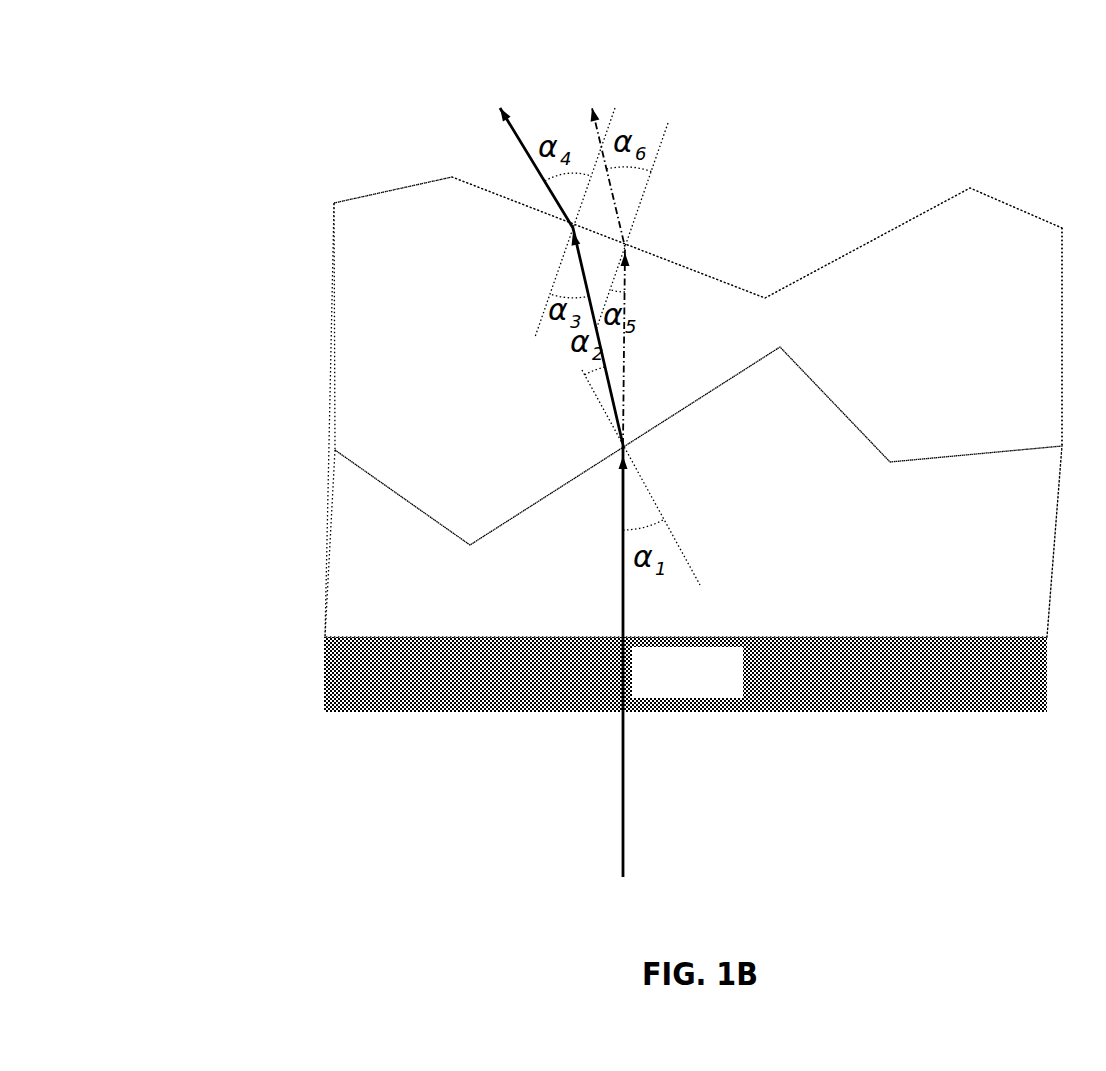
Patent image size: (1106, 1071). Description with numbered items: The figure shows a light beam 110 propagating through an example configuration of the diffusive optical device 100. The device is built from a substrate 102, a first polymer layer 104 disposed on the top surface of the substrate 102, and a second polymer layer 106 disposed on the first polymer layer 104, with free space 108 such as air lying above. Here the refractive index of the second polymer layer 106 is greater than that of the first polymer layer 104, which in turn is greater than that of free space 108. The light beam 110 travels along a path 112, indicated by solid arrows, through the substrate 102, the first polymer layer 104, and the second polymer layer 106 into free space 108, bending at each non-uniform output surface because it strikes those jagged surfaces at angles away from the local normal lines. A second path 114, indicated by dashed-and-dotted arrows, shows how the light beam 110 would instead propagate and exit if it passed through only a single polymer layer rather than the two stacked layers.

The diffusive optical device 100 is at (218, 93).
The substrate 102 is at (707, 684).
The first polymer layer 104 is at (933, 524).
The second polymer layer 106 is at (937, 336).
The free space 108 is at (875, 192).
The light beam 110 is at (623, 772).
The path 112 is at (513, 128).
The path 114 is at (609, 200).